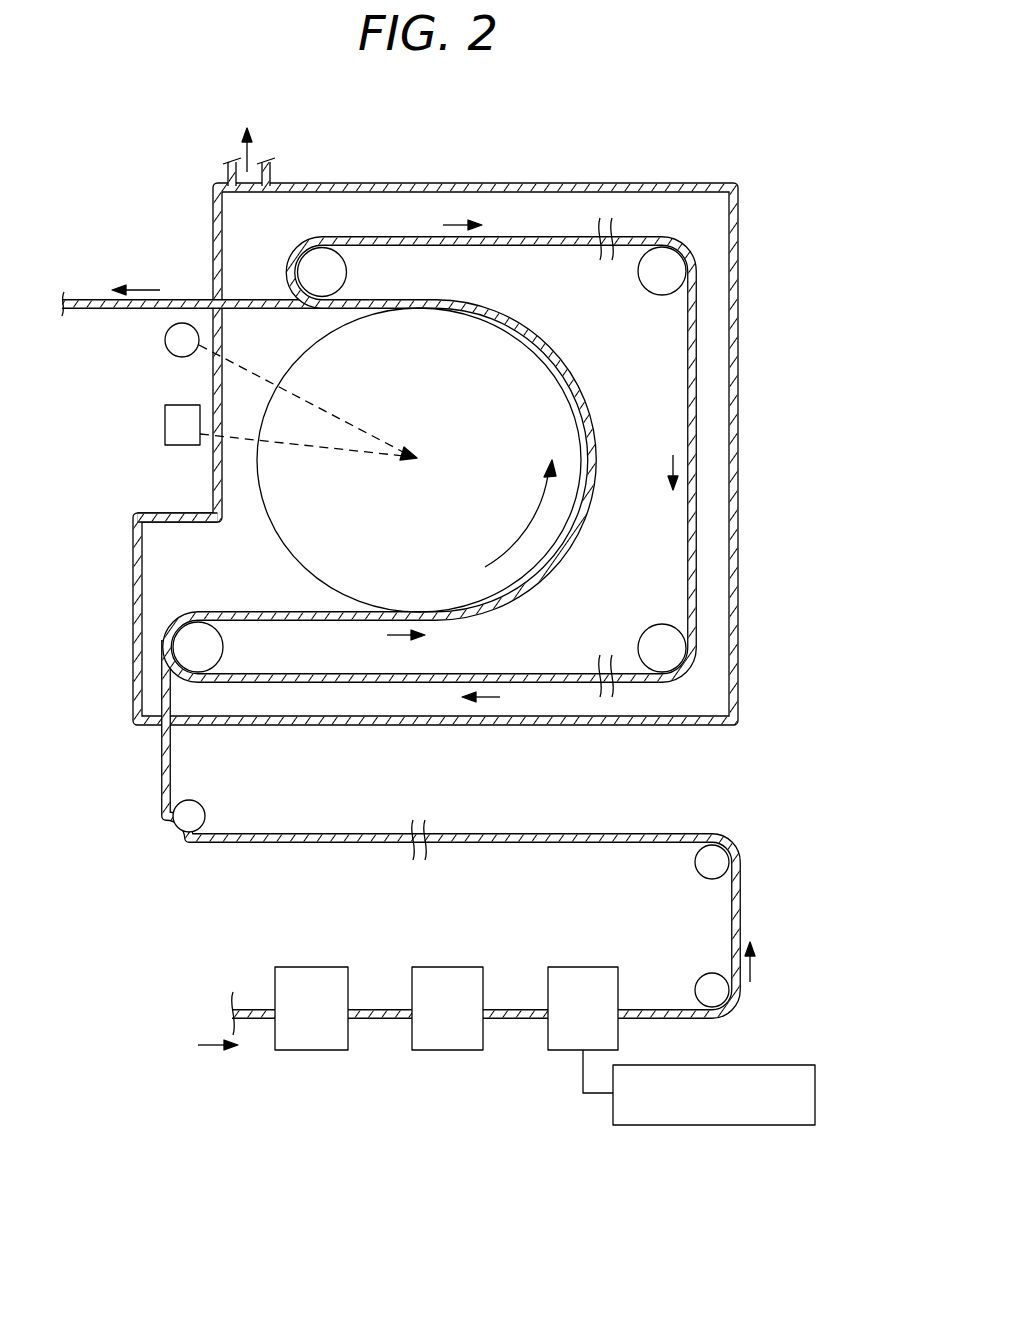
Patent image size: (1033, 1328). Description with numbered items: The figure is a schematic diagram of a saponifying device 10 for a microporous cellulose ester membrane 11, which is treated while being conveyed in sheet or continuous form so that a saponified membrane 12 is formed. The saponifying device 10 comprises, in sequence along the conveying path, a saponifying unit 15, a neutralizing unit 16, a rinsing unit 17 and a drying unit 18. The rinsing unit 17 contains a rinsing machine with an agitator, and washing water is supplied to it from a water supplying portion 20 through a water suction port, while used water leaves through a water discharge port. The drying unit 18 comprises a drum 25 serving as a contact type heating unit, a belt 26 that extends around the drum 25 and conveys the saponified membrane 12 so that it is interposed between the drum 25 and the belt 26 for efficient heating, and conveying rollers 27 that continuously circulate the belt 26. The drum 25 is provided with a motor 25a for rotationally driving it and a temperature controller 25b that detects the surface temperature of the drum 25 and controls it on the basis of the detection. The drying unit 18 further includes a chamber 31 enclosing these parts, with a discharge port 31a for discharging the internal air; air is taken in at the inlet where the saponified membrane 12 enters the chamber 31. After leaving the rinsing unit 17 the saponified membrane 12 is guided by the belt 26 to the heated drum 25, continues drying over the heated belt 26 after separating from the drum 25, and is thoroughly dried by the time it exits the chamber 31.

The saponifying device 10 is at (158, 1113).
The microporous cellulose ester membrane 11 is at (250, 1010).
The saponified membrane 12 is at (180, 300).
The saponifying unit 15 is at (307, 1051).
The neutralizing unit 16 is at (443, 1051).
The rinsing unit 17 is at (588, 966).
The drying unit 18 is at (458, 175).
The water supplying portion 20 is at (697, 1127).
The drum 25 is at (283, 542).
The motor 25a is at (177, 358).
The temperature controller 25b is at (168, 448).
The belt 26 is at (553, 672).
The conveying roller 27 is at (347, 270).
The chamber 31 is at (193, 512).
The discharge port 31a is at (228, 182).